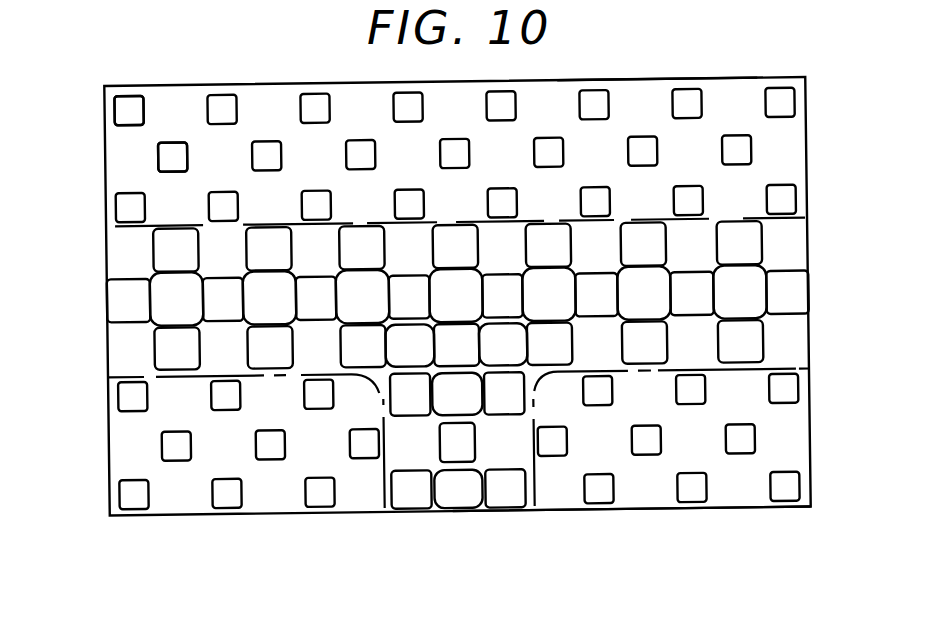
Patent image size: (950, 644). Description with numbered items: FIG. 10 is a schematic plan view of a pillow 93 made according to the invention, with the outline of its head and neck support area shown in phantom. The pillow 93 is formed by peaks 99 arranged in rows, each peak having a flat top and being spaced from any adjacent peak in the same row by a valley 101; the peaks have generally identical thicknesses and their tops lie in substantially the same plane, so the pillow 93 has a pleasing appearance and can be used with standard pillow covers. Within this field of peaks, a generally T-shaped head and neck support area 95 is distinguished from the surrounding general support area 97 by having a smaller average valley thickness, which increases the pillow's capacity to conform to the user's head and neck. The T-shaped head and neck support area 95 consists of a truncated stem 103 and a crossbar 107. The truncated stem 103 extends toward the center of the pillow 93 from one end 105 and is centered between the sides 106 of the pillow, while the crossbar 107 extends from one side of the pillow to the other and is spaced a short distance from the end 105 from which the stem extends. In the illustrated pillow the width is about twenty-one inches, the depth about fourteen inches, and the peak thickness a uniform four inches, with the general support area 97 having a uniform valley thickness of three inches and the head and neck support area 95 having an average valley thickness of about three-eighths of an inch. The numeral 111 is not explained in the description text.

The general support area 97 is at (741, 80).
The top edge 111 is at (672, 79).
The pillow 93 is at (810, 175).
The head and neck support area 95 is at (789, 260).
The peak 99 is at (185, 124).
The valley 101 is at (135, 88).
The truncated stem 103 is at (462, 492).
The end 105 is at (634, 512).
The sides 106 is at (107, 435).
The crossbar 107 is at (316, 248).